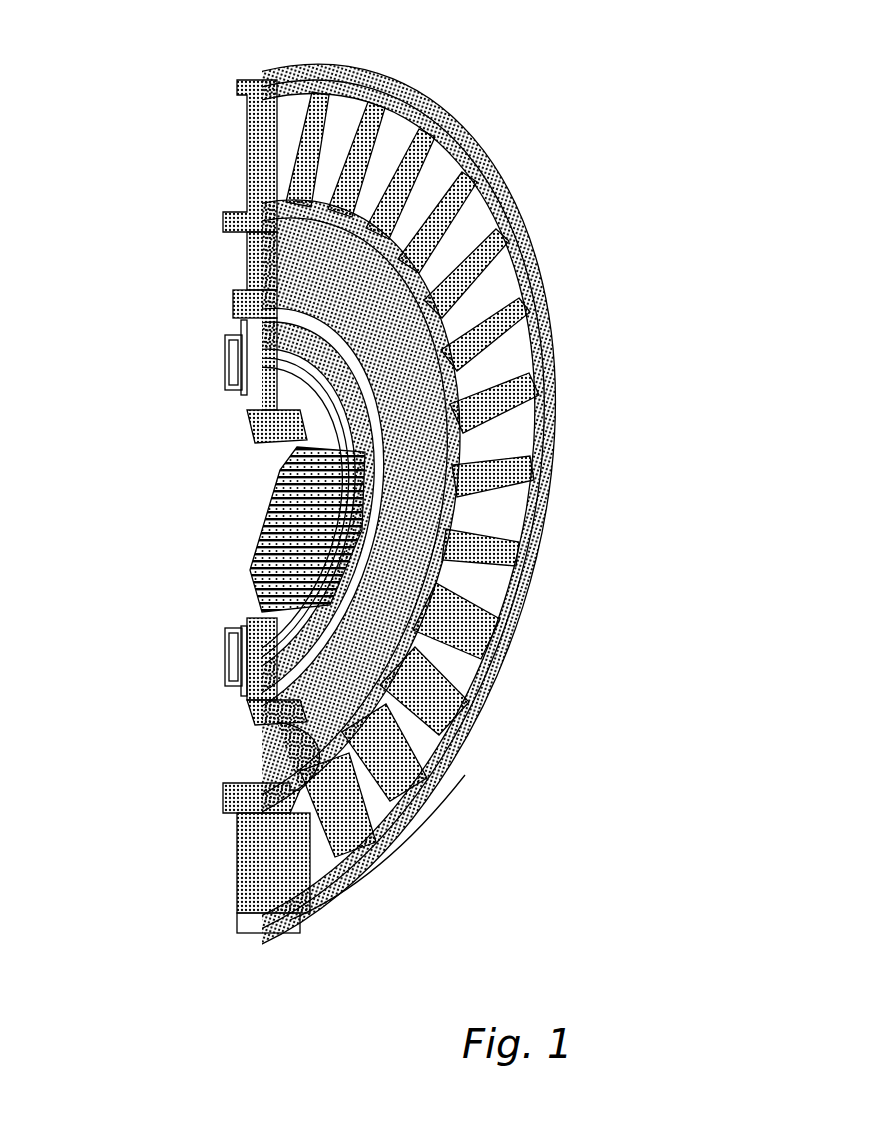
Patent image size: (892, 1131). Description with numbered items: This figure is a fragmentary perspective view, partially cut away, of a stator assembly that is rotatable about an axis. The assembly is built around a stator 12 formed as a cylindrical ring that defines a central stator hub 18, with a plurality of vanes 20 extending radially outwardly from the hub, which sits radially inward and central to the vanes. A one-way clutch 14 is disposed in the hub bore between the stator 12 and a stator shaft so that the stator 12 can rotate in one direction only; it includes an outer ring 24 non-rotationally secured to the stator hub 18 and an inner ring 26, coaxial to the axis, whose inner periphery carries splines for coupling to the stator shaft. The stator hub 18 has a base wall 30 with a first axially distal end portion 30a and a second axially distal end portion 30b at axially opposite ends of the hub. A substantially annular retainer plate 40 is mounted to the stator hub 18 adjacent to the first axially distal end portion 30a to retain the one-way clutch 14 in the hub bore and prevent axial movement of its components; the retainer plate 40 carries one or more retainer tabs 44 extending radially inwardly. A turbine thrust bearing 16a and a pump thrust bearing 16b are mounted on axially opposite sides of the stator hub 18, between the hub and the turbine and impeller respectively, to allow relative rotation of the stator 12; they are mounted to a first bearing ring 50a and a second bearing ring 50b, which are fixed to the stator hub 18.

The stator 12 is at (230, 167).
The one-way clutch 14 is at (233, 403).
The turbine thrust bearing 16a is at (420, 414).
The pump thrust bearing 16b is at (218, 359).
The stator hub 18 is at (225, 817).
The vanes 20 is at (402, 162).
The outer ring 24 is at (230, 678).
The inner ring 26 is at (230, 636).
The base wall 30 is at (275, 728).
The first axially distal end portion 30a is at (453, 250).
The second axially distal end portion 30b is at (240, 310).
The retainer plate 40 is at (290, 443).
The retainer tabs 44 is at (290, 526).
The first bearing ring 50a is at (433, 790).
The second bearing ring 50b is at (240, 323).